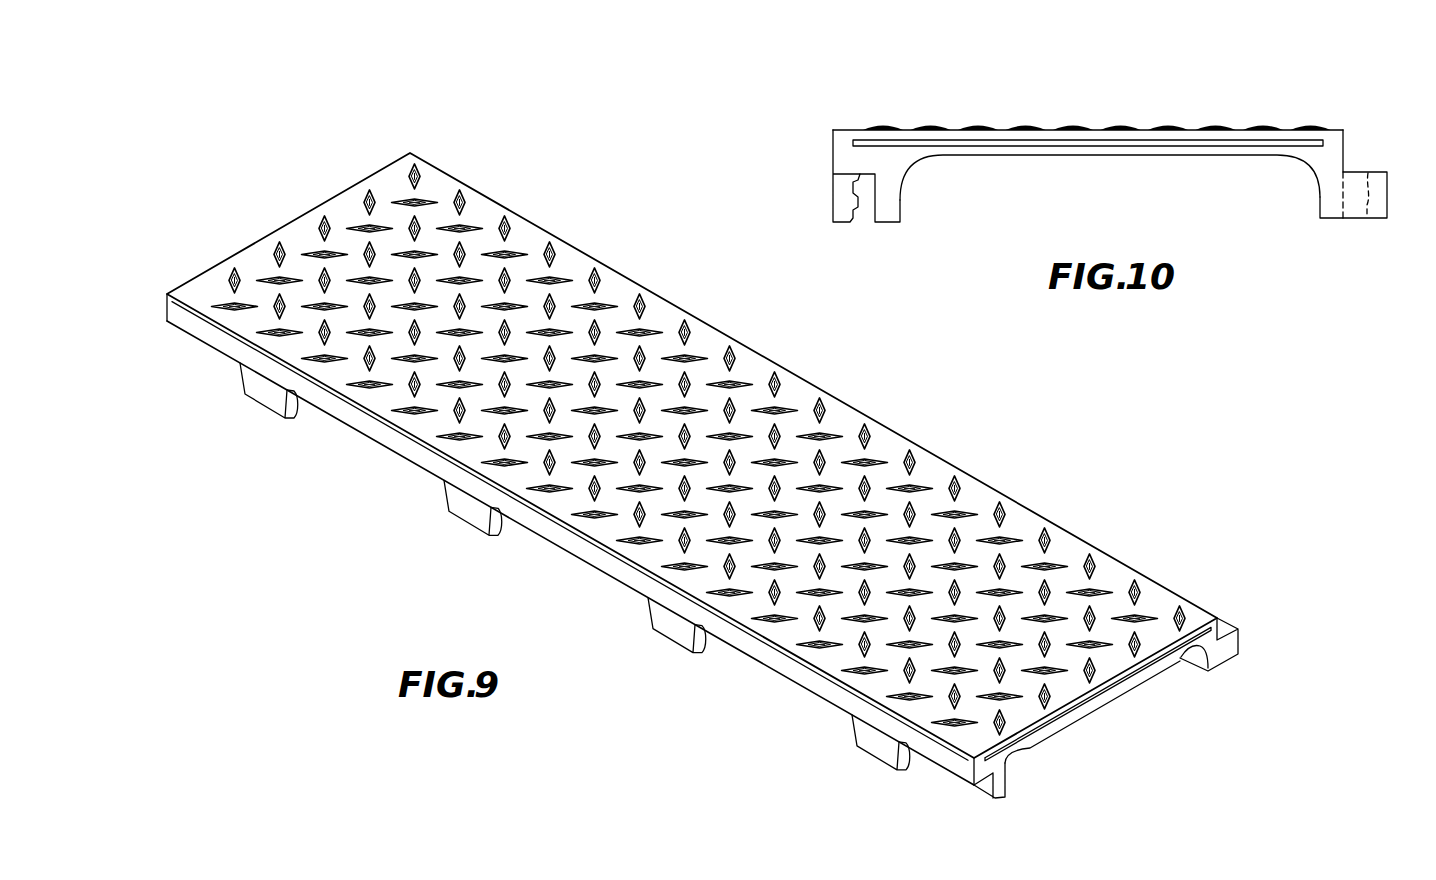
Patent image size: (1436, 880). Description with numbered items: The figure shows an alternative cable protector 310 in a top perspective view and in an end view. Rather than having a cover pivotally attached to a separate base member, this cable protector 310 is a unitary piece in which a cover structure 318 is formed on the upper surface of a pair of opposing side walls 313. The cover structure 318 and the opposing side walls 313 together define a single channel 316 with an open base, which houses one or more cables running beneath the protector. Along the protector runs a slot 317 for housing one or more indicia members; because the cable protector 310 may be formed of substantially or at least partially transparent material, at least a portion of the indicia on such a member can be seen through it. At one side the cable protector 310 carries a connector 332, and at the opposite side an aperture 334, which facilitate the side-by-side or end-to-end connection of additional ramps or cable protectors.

In FIG. 9, the cable protector 310 is at (504, 150).
In FIG. 10, the cable protector 310 is at (798, 146).
In FIG. 10, the opposing side walls 313 is at (888, 207).
In FIG. 9, the channel 316 is at (1093, 713).
In FIG. 10, the channel 316 is at (1170, 183).
In FIG. 9, the slot 317 is at (1035, 733).
In FIG. 10, the slot 317 is at (993, 147).
In FIG. 9, the cover structure 318 is at (293, 232).
In FIG. 10, the cover structure 318 is at (1233, 137).
In FIG. 9, the connector 332 is at (456, 500).
In FIG. 10, the connector 332 is at (842, 197).
In FIG. 10, the aperture 334 is at (1357, 212).